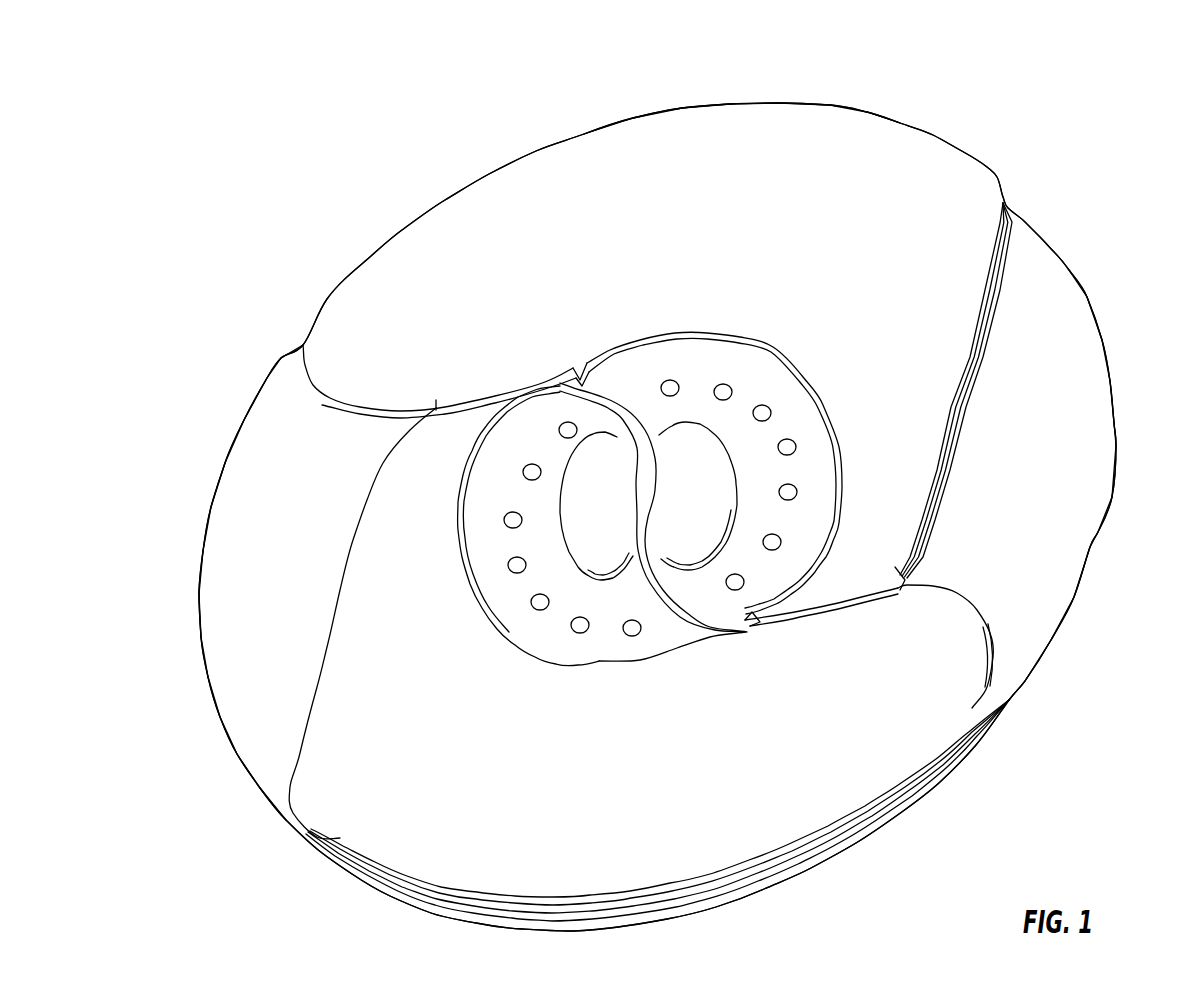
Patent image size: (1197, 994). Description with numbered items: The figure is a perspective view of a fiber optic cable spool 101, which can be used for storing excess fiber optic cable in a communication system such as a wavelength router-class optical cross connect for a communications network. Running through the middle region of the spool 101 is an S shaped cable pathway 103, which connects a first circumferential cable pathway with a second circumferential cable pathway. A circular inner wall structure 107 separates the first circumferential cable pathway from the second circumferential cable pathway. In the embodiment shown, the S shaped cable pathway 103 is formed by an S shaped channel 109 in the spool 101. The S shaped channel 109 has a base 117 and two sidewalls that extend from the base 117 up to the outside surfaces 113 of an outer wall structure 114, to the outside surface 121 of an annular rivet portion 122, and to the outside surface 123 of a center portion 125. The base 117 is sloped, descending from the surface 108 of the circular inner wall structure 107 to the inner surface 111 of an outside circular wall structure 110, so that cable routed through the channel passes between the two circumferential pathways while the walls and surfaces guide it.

The fiber optic cable spool 101 is at (337, 120).
The S shaped cable pathway 103 is at (870, 590).
The circular inner wall structure 107 is at (1003, 273).
The surface of circular inner wall structure 108 is at (303, 528).
The S shaped channel 109 is at (583, 393).
The outside circular wall structure 110 is at (1088, 298).
The inner surface of outside circular wall structure 111 is at (1038, 523).
The outside surfaces of outer wall structure 113 is at (427, 350).
The outer wall structure 114 is at (741, 104).
The base 117 is at (679, 606).
The outside surface of annular rivet portion 121 is at (777, 526).
The annular rivet portion 122 is at (803, 427).
The outside surface of center portion 123 is at (716, 499).
The center portion 125 is at (680, 442).